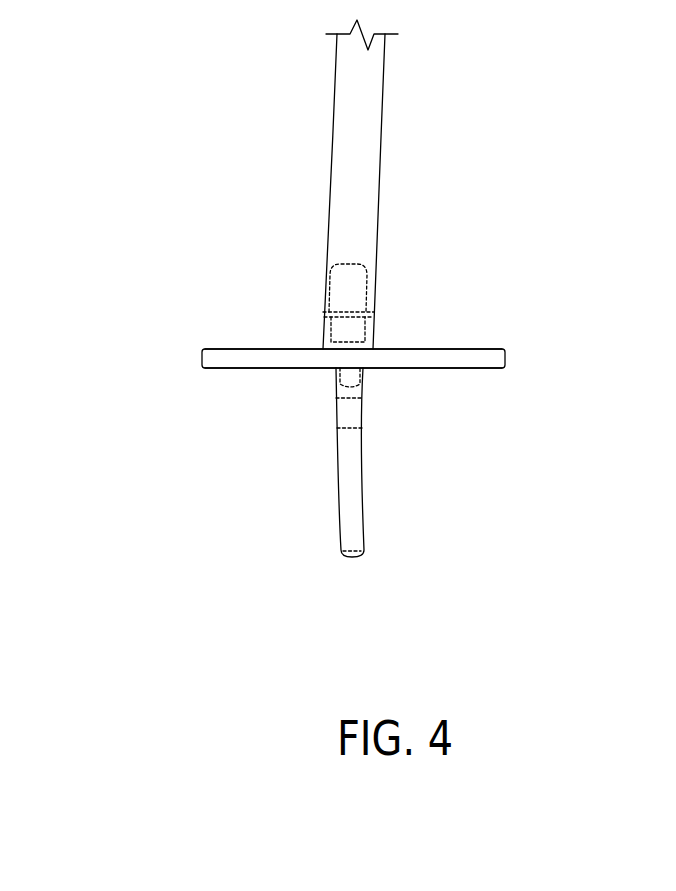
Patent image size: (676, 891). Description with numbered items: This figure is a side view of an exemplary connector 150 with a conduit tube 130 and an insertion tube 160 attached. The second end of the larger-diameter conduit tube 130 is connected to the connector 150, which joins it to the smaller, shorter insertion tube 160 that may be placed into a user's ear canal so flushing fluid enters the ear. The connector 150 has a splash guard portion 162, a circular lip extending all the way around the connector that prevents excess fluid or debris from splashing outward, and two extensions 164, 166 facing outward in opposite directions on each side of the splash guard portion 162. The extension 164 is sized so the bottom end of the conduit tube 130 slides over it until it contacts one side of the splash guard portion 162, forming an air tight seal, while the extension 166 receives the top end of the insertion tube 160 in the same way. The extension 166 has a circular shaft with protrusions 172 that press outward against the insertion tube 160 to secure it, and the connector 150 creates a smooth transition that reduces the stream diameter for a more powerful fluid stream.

The conduit tube 130 is at (308, 202).
The connector 150 is at (486, 335).
The insertion tube 160 is at (323, 469).
The splash guard portion 162 is at (248, 337).
The extension 164 is at (384, 289).
The extension 166 is at (404, 422).
The protrusions 172 is at (322, 399).